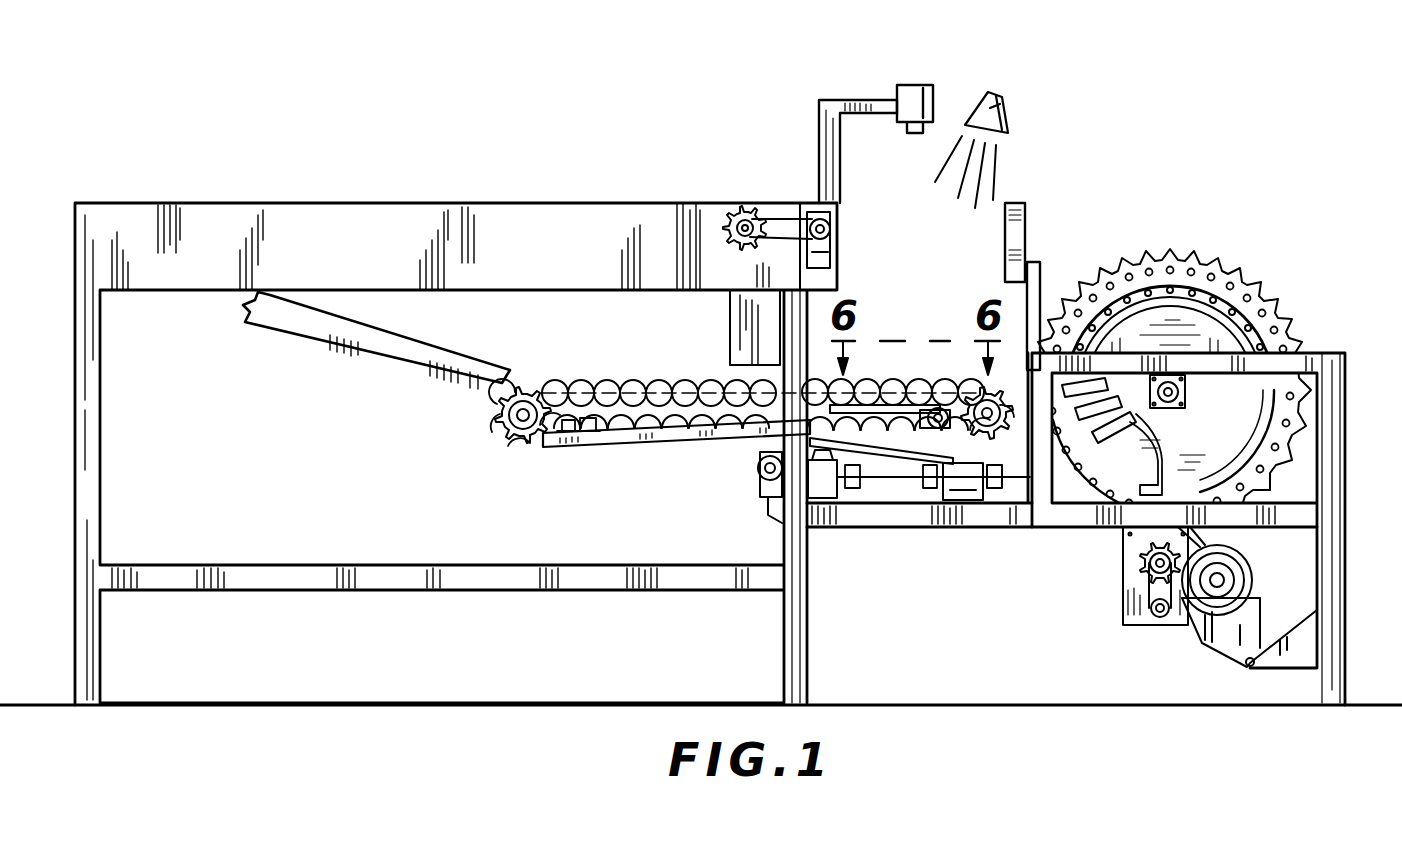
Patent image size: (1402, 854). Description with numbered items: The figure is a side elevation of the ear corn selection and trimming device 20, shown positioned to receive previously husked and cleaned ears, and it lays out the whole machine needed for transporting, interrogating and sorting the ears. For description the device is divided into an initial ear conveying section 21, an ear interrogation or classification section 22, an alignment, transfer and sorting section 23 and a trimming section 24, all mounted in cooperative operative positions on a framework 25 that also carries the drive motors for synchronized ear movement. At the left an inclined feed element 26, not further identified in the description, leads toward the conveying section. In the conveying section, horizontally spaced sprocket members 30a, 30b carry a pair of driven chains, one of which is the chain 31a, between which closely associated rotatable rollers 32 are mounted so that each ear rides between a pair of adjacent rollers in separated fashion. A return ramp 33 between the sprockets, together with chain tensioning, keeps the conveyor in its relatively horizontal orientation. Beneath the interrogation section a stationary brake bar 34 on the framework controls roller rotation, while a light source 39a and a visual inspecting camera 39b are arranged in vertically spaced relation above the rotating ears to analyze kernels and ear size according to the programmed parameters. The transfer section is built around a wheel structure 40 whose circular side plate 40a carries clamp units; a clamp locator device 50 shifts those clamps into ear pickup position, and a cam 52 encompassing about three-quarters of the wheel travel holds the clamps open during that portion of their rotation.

The ear corn selection and trimming device 20 is at (998, 180).
The initial ear conveying section 21 is at (640, 450).
The ear interrogation or classification section 22 is at (940, 272).
The alignment, transfer and sorting section 23 is at (1118, 257).
The trimming section 24 is at (1120, 582).
The framework 25 is at (383, 562).
The feed chute 26 is at (453, 350).
The sprocket member 30a is at (513, 437).
The sprocket member 30b is at (993, 440).
The driven chain 31a is at (695, 428).
The rollers 32 is at (592, 424).
The return ramp 33 is at (903, 458).
The stationary brake bar 34 is at (898, 404).
The light source 39a is at (1005, 108).
The visual inspecting camera 39b is at (915, 102).
The wheel structure 40 is at (1241, 270).
The circular side plate 40a is at (1240, 300).
The clamp locator device 50 is at (1038, 238).
The cam 52 is at (1258, 420).